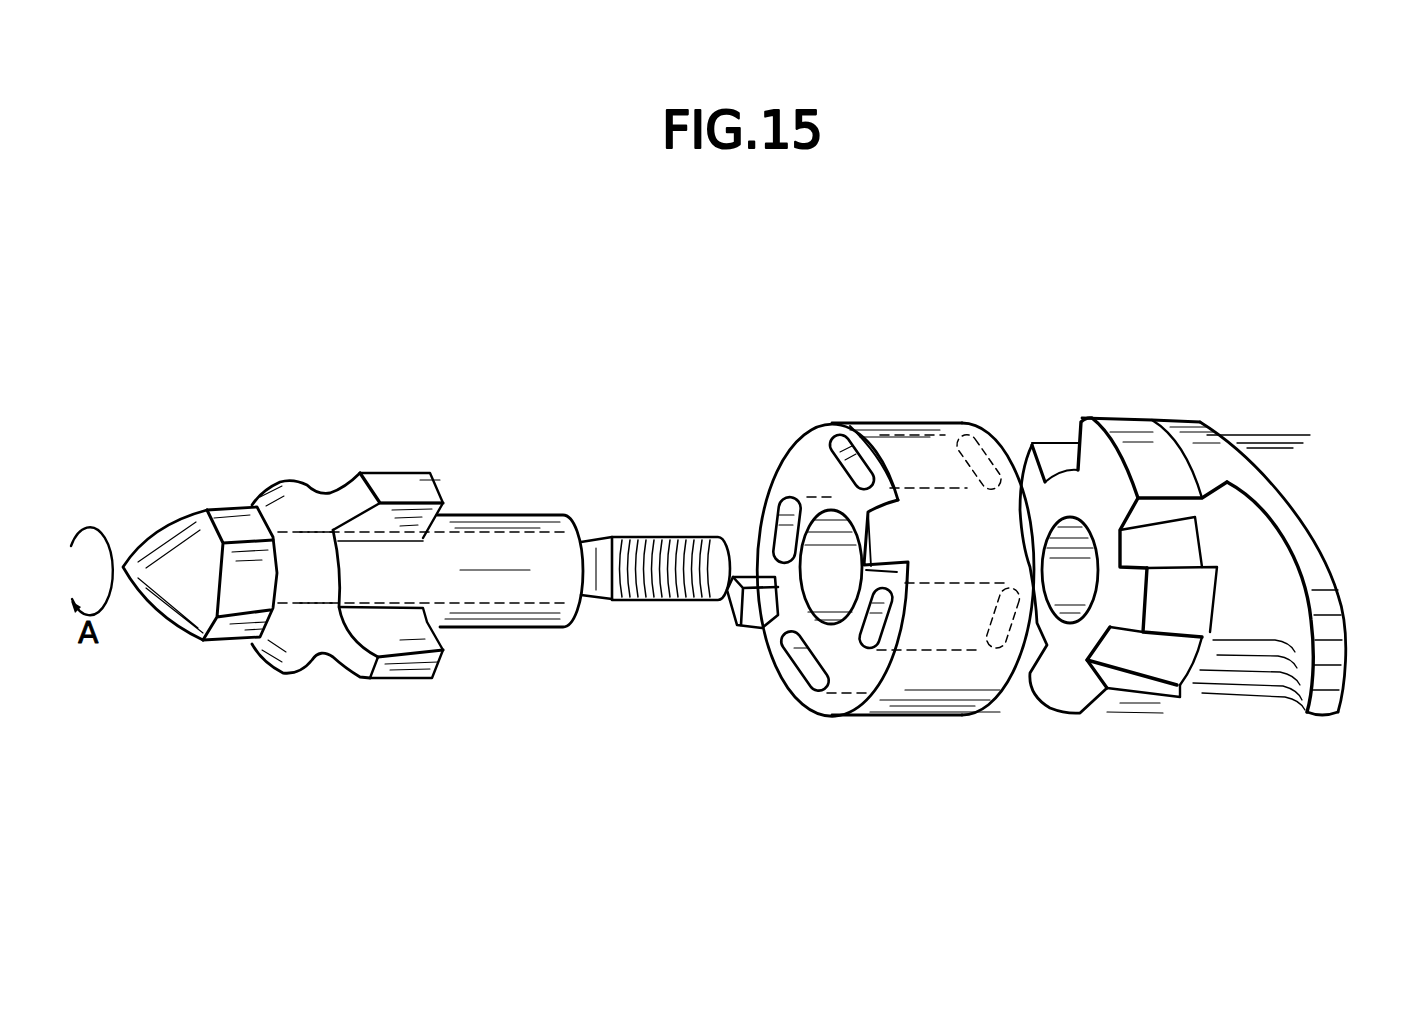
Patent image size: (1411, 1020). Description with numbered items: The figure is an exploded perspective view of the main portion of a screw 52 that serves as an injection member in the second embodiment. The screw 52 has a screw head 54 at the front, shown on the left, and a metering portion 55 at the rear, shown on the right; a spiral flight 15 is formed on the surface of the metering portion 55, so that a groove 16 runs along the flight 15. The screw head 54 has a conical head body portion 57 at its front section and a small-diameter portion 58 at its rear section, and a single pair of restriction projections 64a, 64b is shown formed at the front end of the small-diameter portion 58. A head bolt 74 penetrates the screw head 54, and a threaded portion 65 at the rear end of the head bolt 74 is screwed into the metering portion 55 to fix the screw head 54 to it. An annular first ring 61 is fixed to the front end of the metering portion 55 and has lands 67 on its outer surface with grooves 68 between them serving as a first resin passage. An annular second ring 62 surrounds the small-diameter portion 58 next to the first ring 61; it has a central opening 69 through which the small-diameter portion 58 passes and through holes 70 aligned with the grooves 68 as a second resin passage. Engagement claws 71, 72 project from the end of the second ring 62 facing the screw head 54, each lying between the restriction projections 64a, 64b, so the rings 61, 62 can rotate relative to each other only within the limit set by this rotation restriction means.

The spiral flight 15 is at (1312, 558).
The groove 16 is at (1307, 487).
The screw 52 is at (880, 352).
The screw head 54 is at (268, 474).
The metering portion 55 is at (1283, 413).
The conical head body portion 57 is at (268, 672).
The small-diameter portion 58 is at (520, 622).
The first ring 61 is at (1153, 397).
The second ring 62 is at (952, 400).
The restriction projection 64a is at (403, 478).
The restriction projection 64b is at (405, 670).
The threaded portion 65 is at (657, 534).
The land 67 is at (1197, 612).
The groove 68 is at (1167, 640).
The central opening 69 is at (832, 603).
The through hole 70 is at (832, 440).
The engagement claw 71 is at (733, 606).
The engagement claw 72 is at (893, 538).
The head bolt 74 is at (189, 545).